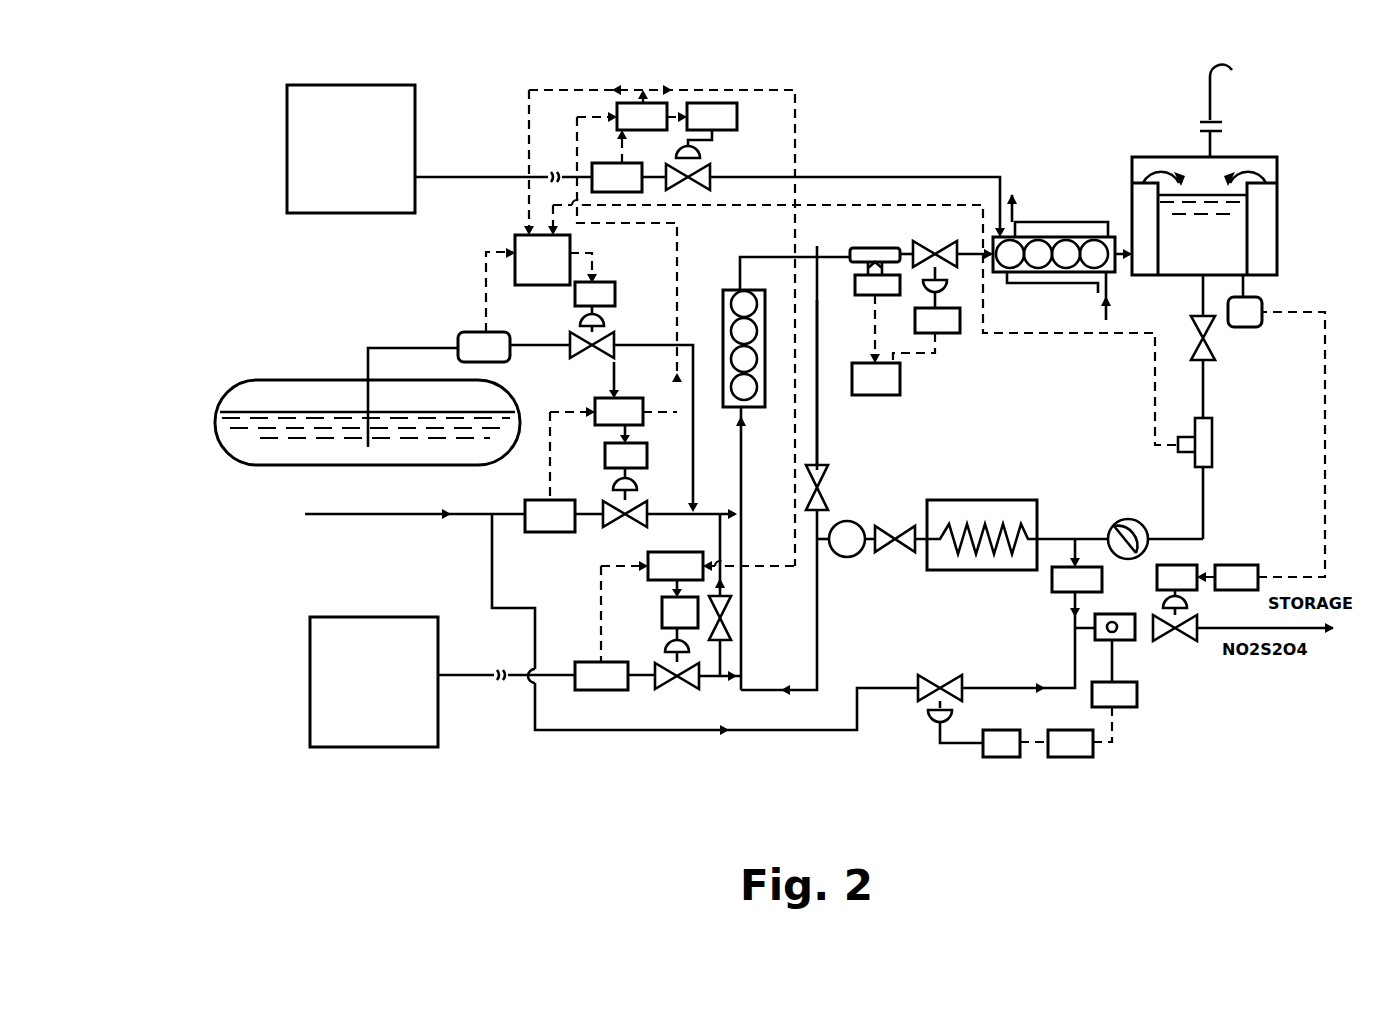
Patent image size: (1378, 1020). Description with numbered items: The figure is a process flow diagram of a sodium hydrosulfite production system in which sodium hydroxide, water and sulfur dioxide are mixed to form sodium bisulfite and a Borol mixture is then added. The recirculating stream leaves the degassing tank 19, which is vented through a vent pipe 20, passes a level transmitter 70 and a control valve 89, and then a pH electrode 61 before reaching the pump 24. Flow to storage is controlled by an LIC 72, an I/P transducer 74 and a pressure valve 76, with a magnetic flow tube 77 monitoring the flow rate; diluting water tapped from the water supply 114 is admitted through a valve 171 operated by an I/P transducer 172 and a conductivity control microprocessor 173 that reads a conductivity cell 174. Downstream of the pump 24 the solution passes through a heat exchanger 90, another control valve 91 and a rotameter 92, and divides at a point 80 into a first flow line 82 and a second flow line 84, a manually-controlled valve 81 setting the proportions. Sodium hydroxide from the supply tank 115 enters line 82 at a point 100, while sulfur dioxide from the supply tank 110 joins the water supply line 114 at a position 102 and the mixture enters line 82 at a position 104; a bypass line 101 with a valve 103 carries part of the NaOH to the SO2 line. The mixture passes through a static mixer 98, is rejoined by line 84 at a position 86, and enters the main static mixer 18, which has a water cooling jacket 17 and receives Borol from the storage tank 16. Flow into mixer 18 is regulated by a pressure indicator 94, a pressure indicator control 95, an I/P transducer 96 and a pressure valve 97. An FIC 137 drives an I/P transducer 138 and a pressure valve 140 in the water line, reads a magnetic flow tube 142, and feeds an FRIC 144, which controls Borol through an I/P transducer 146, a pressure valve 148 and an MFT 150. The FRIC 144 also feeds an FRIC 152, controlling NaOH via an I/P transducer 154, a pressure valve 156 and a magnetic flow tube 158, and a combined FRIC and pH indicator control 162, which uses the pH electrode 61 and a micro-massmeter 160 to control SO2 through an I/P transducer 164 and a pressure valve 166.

The storage tank 16 is at (287, 137).
The water cooling jacket 17 is at (1081, 231).
The static mixer 18 is at (1035, 237).
The degassing tank 19 is at (1267, 223).
The vent pipe 20 is at (1206, 102).
The pump 24 is at (1124, 513).
The pH electrode 61 is at (1212, 462).
The level transmitter 70 is at (1262, 305).
The LIC 72 is at (1245, 565).
The I/P transducer 74 is at (1180, 565).
The pressure valve 76 is at (1181, 640).
The magnetic flow tube 77 is at (1058, 592).
The point 80 is at (817, 548).
The manually-controlled valve 81 is at (826, 494).
The first flow line 82 is at (817, 638).
The second flow line 84 is at (817, 333).
The position 86 is at (817, 348).
The control valve 89 is at (1213, 346).
The heat exchanger 90 is at (985, 570).
The control valve 91 is at (896, 531).
The rotameter 92 is at (852, 557).
The pressure indicator 94 is at (869, 248).
The pressure indicator control 95 is at (900, 386).
The I/P transducer 96 is at (952, 333).
The pressure valve 97 is at (938, 250).
The static mixer 98 is at (729, 291).
The point 100 is at (745, 676).
The bypass line 101 is at (725, 656).
The position 102 is at (698, 514).
The valve 103 is at (731, 612).
The position 104 is at (741, 518).
The supply tank 110 is at (447, 463).
The water supply line 114 is at (393, 520).
The supply tank 115 is at (310, 722).
The FIC 137 is at (643, 419).
The I/P transducer 138 is at (647, 460).
The pressure valve 140 is at (630, 516).
The magnetic flow tube 142 is at (545, 532).
The FRIC 144 is at (650, 130).
The I/P transducer 146 is at (737, 117).
The pressure valve 148 is at (702, 170).
The MFT 150 is at (597, 163).
The FRIC 152 is at (648, 582).
The I/P transducer 154 is at (662, 618).
The pressure valve 156 is at (672, 684).
The magnetic flow tube 158 is at (612, 690).
The micro-massmeter 160 is at (510, 336).
The combined FRIC and pH indicator control 162 is at (515, 243).
The I/P transducer 164 is at (615, 295).
The pressure valve 166 is at (594, 350).
The valve 171 is at (950, 697).
The I/P transducer 172 is at (988, 757).
The conductivity control microprocessor 173 is at (1088, 757).
The conductivity cell 174 is at (1125, 640).